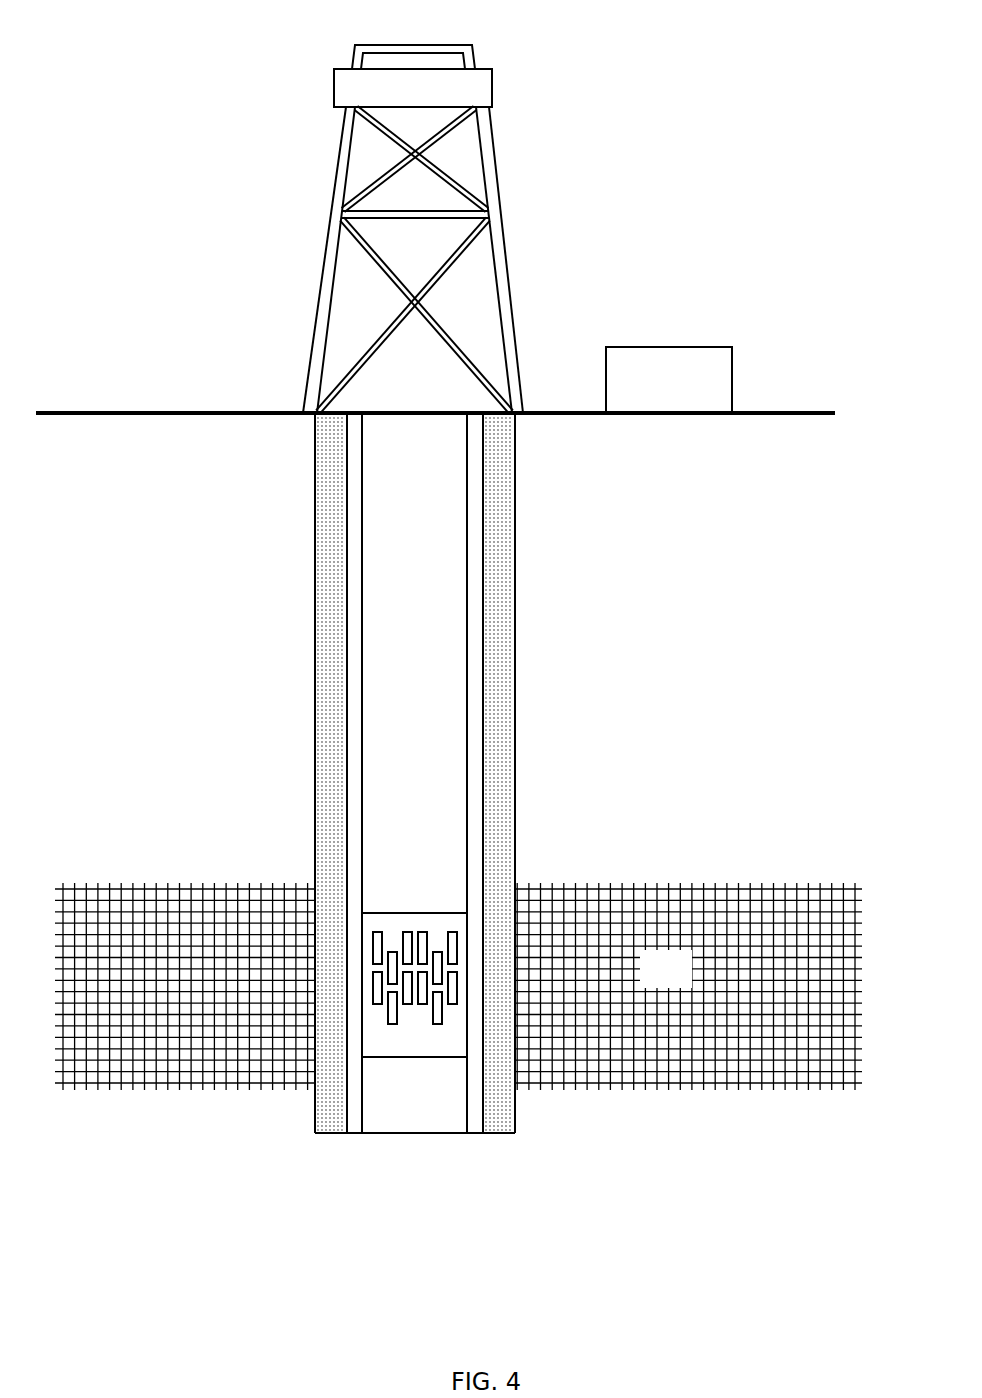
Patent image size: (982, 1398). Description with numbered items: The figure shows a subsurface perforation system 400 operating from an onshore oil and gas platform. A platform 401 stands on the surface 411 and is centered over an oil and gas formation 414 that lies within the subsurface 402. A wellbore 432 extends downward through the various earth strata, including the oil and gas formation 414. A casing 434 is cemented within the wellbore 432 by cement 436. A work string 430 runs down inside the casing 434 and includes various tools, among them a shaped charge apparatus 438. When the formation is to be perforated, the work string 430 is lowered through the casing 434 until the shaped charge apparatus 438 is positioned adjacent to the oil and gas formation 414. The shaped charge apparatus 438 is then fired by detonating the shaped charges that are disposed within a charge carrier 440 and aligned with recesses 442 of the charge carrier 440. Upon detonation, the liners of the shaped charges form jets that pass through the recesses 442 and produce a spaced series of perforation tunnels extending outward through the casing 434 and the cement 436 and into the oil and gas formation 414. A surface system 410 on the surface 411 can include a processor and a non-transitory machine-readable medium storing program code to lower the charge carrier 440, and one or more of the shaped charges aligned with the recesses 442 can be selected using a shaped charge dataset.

The subsurface perforation system 400 is at (667, 185).
The platform 401 is at (493, 86).
The subsurface 402 is at (624, 569).
The surface system 410 is at (655, 390).
The surface 411 is at (787, 411).
The oil and gas formation 414 is at (680, 981).
The work string 430 is at (417, 776).
The wellbore 432 is at (518, 712).
The casing 434 is at (355, 600).
The cement 436 is at (338, 684).
The shaped charge apparatus 438 is at (418, 910).
The charge carrier 440 is at (383, 919).
The recesses 442 is at (372, 945).